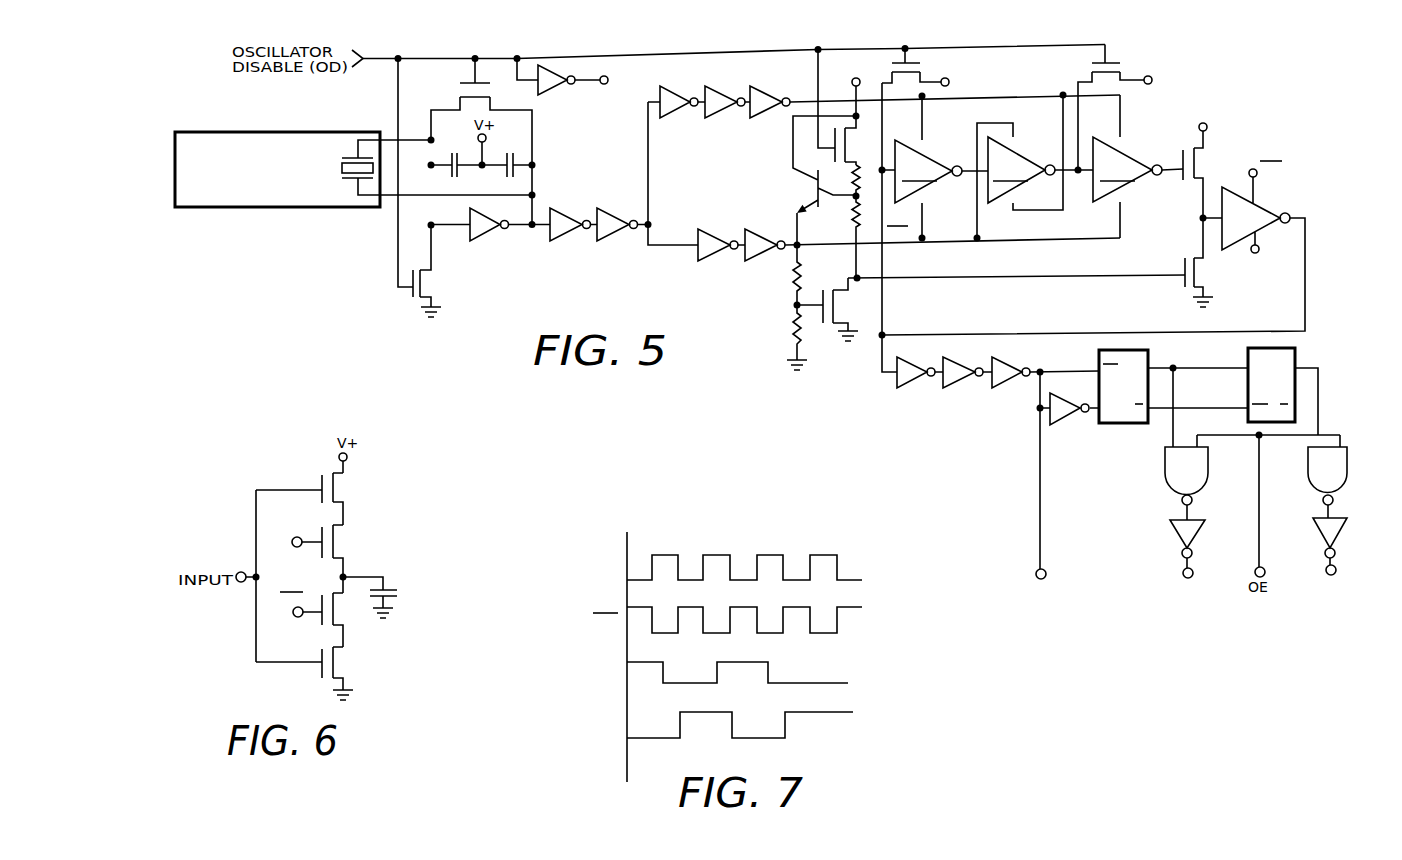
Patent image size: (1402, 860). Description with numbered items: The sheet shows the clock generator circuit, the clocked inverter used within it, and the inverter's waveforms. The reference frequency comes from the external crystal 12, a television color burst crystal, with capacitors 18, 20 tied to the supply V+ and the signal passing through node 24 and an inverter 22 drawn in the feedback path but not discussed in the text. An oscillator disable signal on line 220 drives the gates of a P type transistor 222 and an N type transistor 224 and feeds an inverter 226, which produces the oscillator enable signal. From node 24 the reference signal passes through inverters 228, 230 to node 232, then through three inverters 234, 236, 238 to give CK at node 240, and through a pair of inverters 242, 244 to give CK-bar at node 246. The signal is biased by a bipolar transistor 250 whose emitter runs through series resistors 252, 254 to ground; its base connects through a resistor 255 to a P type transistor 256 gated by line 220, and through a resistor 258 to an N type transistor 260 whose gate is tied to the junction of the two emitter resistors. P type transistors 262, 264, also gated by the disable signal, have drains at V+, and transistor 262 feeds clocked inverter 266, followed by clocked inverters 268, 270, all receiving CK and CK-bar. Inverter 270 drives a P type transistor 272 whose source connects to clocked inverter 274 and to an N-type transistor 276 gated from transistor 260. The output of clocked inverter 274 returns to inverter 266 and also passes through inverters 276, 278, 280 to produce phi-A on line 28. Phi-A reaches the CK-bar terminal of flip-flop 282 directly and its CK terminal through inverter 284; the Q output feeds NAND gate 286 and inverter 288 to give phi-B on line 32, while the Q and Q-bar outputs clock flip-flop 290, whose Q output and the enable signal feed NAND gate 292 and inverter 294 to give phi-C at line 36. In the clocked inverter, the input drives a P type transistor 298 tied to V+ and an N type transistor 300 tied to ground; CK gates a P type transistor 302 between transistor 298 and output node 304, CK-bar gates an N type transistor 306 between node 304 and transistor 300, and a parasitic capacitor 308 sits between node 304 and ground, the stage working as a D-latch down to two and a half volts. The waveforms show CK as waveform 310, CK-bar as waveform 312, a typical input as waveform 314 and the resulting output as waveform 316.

In FIG. 5, the external crystal 12 is at (315, 147).
In FIG. 5, the capacitor 18 is at (452, 151).
In FIG. 5, the capacitor 20 is at (509, 151).
In FIG. 5, the inverter 22 is at (491, 239).
In FIG. 5, the node 24 is at (531, 215).
In FIG. 5, the line 220 is at (436, 56).
In FIG. 5, the P type transistor 222 is at (458, 93).
In FIG. 5, the N type transistor 224 is at (408, 297).
In FIG. 5, the inverter 226 is at (551, 83).
In FIG. 5, the inverter 228 is at (566, 212).
In FIG. 5, the inverter 230 is at (621, 212).
In FIG. 5, the node 232 is at (651, 248).
In FIG. 5, the inverter 234 is at (678, 113).
In FIG. 5, the inverter 236 is at (718, 113).
In FIG. 5, the inverter 238 is at (762, 113).
In FIG. 5, the node 240 is at (808, 90).
In FIG. 5, the inverter 242 is at (706, 263).
In FIG. 5, the inverter 244 is at (758, 263).
In FIG. 5, the node 246 is at (834, 246).
In FIG. 5, the bipolar transistor 250 is at (807, 187).
In FIG. 5, the resistor 252 is at (792, 282).
In FIG. 5, the resistor 254 is at (792, 330).
In FIG. 5, the resistor 255 is at (848, 172).
In FIG. 5, the P type transistor 256 is at (857, 150).
In FIG. 5, the resistor 258 is at (852, 221).
In FIG. 5, the N type transistor 260 is at (832, 327).
In FIG. 5, the P type transistor 262 is at (927, 68).
In FIG. 5, the P type transistor 264 is at (1123, 65).
In FIG. 5, the clocked inverter 266 is at (935, 167).
In FIG. 5, the clocked inverter 268 is at (1027, 166).
In FIG. 5, the clocked inverter 270 is at (1130, 166).
In FIG. 5, the P type transistor 272 is at (1208, 158).
In FIG. 5, the clocked inverter 274 is at (1250, 213).
In FIG. 5, the N-type transistor 276 is at (1210, 281).
In FIG. 5, the inverter 278 is at (960, 390).
In FIG. 5, the inverter 280 is at (1008, 390).
In FIG. 5, the flip-flop 282 is at (1135, 354).
In FIG. 5, the inverter 284 is at (1067, 427).
In FIG. 5, the NAND gate 286 is at (1170, 465).
In FIG. 5, the inverter 288 is at (1180, 533).
In FIG. 5, the flip-flop 290 is at (1296, 352).
In FIG. 5, the NAND gate 292 is at (1338, 470).
In FIG. 5, the inverter 294 is at (1336, 536).
In FIG. 5, the terminal 28 is at (1039, 492).
In FIG. 5, the terminal 32 is at (1184, 566).
In FIG. 5, the terminal 36 is at (1328, 562).
In FIG. 6, the P type transistor 298 is at (351, 492).
In FIG. 6, the P type transistor 302 is at (351, 532).
In FIG. 6, the node 304 is at (368, 573).
In FIG. 6, the N type transistor 306 is at (346, 619).
In FIG. 6, the N type transistor 300 is at (346, 664).
In FIG. 6, the parasitic capacitor 308 is at (399, 592).
In FIG. 7, the waveform 310 is at (748, 551).
In FIG. 7, the waveform 312 is at (747, 605).
In FIG. 7, the waveform 314 is at (723, 660).
In FIG. 7, the waveform 316 is at (768, 708).